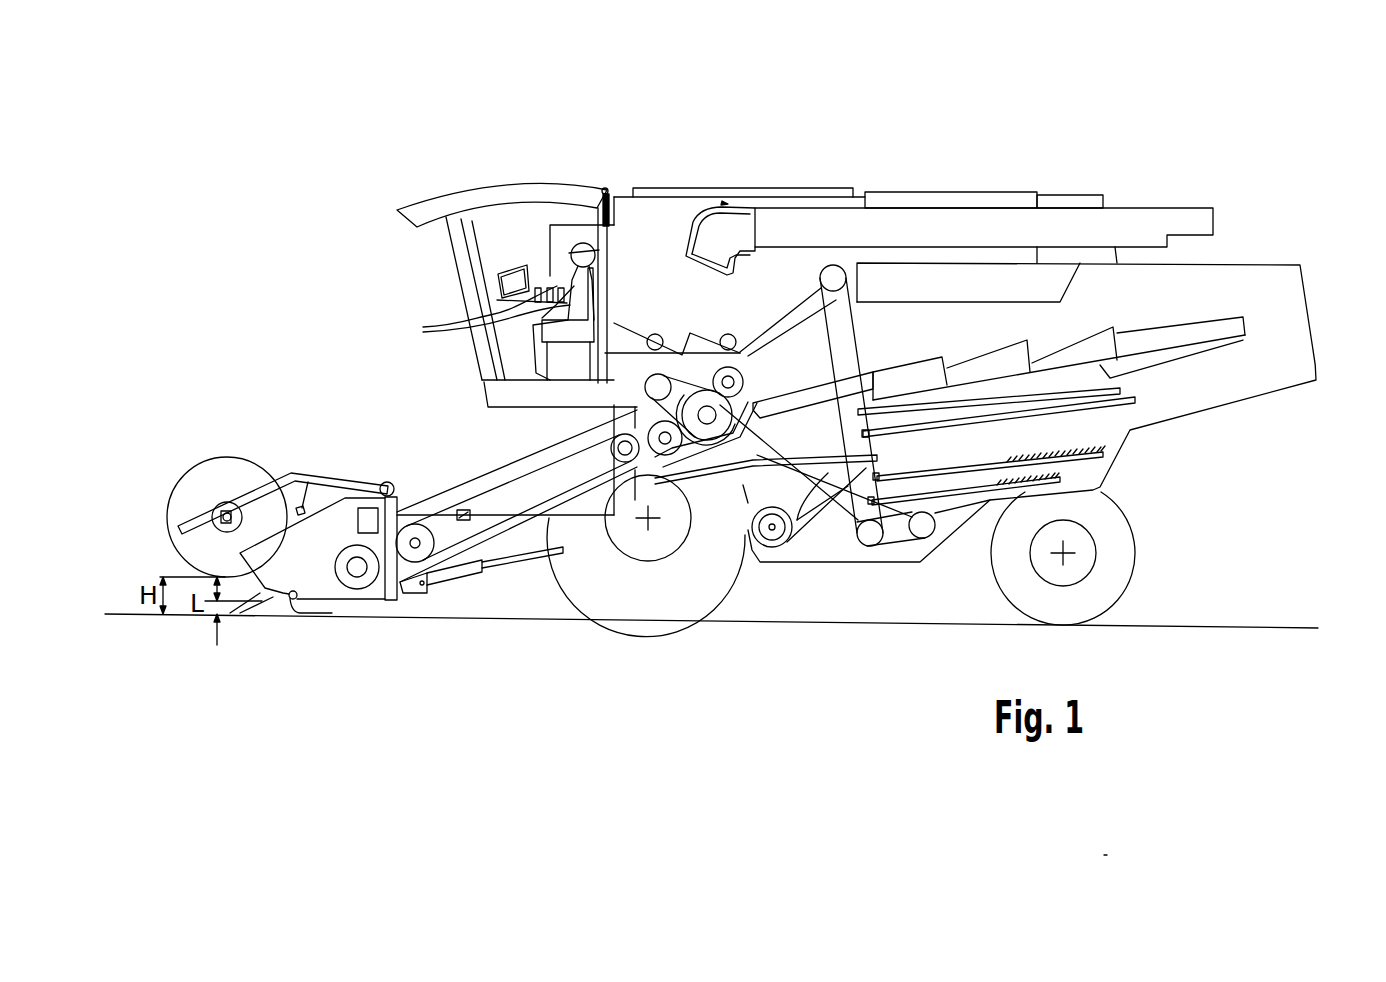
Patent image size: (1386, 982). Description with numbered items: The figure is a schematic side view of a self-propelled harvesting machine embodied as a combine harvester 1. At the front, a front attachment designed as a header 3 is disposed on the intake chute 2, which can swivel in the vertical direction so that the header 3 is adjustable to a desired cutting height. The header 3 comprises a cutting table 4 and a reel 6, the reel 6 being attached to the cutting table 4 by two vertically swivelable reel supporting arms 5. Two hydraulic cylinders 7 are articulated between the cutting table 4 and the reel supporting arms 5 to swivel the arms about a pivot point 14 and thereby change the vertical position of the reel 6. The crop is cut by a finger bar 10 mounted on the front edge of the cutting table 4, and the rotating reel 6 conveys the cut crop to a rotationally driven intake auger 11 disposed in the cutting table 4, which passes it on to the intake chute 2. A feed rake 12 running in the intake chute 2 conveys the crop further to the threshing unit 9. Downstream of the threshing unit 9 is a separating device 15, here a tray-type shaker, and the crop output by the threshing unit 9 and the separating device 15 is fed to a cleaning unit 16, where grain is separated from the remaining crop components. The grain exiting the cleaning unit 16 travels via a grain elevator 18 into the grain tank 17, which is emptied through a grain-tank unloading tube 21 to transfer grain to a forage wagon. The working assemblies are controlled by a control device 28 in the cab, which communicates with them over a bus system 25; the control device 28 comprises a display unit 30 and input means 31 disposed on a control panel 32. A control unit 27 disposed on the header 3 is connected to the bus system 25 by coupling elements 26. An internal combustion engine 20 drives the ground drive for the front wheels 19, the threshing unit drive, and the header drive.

The combine harvester 1 is at (296, 228).
The intake chute 2 is at (440, 490).
The header 3 is at (250, 420).
The cutting table 4 is at (343, 516).
The reel supporting arms 5 is at (302, 478).
The reel 6 is at (203, 485).
The hydraulic cylinders 7 is at (311, 497).
The threshing unit 9 is at (685, 360).
The finger bar 10 is at (277, 600).
The intake auger 11 is at (360, 580).
The feed rake 12 is at (500, 533).
The pivot point 14 is at (385, 482).
The separating device 15 is at (1070, 330).
The cleaning unit 16 is at (1078, 438).
The grain tank 17 is at (665, 235).
The grain elevator 18 is at (866, 442).
The front wheels 19 is at (651, 596).
The internal combustion engine 20 is at (921, 207).
The grain-tank unloading tube 21 is at (1167, 220).
The bus system 25 is at (617, 417).
The coupling elements 26 is at (467, 509).
The control unit 27 is at (360, 517).
The control device 28 is at (494, 240).
The display unit 30 is at (510, 287).
The input means 31 is at (479, 315).
The control panel 32 is at (537, 277).